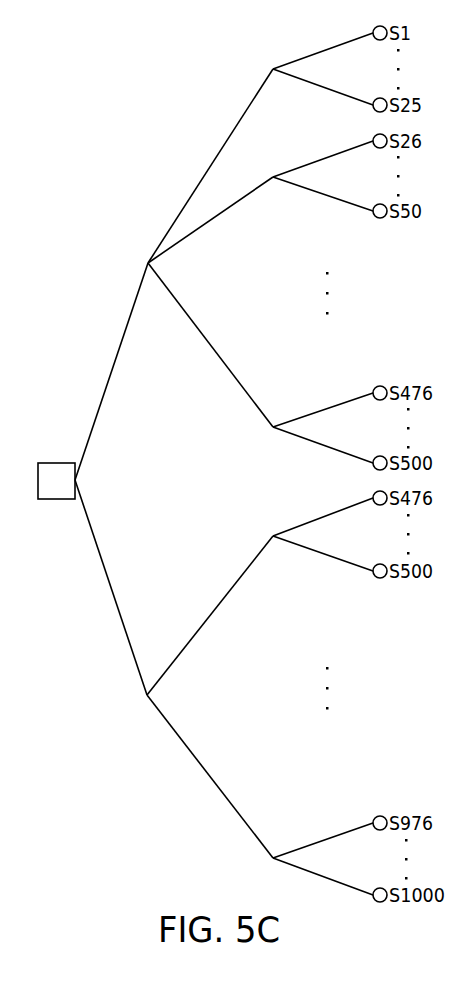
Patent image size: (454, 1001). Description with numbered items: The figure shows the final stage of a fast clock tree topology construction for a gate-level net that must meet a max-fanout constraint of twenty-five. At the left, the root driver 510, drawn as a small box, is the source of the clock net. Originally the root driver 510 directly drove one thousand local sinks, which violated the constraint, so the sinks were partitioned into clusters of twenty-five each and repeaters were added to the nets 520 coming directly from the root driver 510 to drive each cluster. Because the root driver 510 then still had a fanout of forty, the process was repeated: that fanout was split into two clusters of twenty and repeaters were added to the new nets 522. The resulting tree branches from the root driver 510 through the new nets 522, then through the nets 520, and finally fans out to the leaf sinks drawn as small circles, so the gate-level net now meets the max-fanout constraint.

The root driver 510 is at (56, 466).
The nets 520 is at (225, 151).
The new nets 522 is at (110, 356).